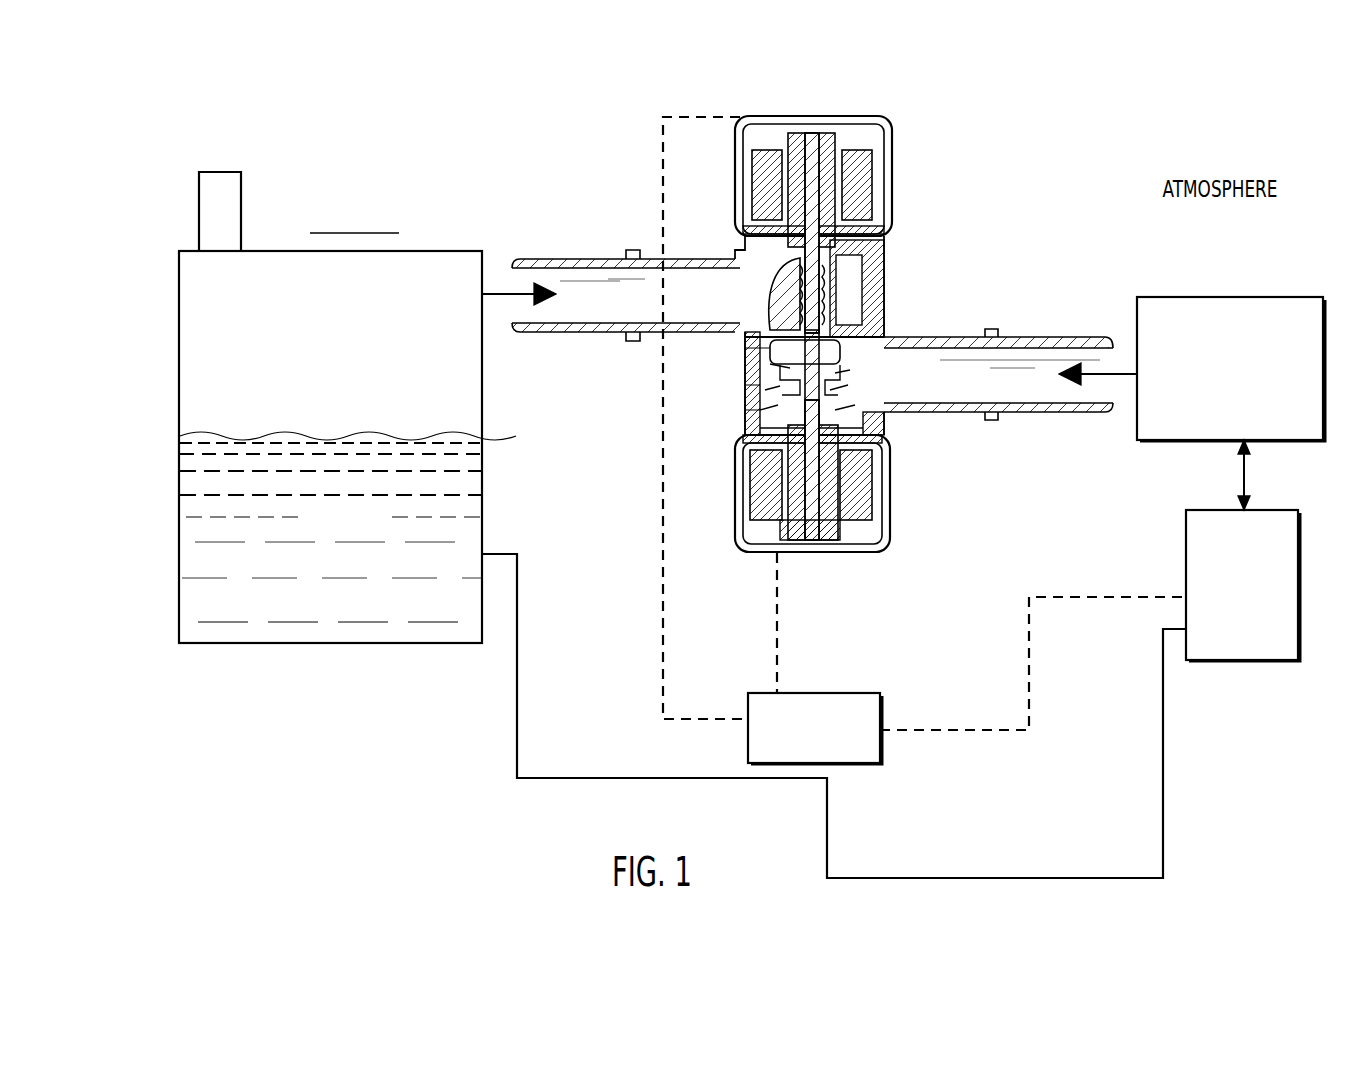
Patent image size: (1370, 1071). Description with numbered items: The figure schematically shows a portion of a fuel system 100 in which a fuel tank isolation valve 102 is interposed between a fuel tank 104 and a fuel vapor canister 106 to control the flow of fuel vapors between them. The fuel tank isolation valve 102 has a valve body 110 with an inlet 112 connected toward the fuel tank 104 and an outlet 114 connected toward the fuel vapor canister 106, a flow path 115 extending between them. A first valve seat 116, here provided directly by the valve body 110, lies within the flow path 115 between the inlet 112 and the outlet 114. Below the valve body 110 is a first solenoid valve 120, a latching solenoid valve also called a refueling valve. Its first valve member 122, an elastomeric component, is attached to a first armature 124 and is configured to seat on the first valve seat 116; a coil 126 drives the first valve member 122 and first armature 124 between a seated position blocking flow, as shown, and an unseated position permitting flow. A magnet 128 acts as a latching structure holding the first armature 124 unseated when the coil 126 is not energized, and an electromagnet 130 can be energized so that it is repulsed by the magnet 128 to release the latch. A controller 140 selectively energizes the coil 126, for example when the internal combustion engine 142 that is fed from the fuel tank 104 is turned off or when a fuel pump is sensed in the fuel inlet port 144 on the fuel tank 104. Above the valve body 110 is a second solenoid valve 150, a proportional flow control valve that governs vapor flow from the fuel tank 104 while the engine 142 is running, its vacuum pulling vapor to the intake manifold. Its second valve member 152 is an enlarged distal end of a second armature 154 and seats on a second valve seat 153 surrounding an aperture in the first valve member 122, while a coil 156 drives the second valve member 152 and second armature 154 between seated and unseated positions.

The fuel system 100 is at (420, 757).
The fuel tank isolation valve 102 is at (936, 160).
The fuel tank 104 is at (252, 645).
The fuel vapor canister 106 is at (1150, 442).
The valve body 110 is at (805, 281).
The inlet 112 is at (545, 270).
The outlet 114 is at (1042, 367).
The flow path 115 is at (965, 373).
The first valve seat 116 is at (845, 360).
The first solenoid valve 120 is at (871, 523).
The first valve member 122 is at (768, 378).
The first armature 124 is at (812, 462).
The coil 126 is at (862, 486).
The magnet 128 is at (832, 522).
The electromagnet 130 is at (872, 532).
The controller 140 is at (843, 752).
The internal combustion engine 142 is at (1232, 662).
The fuel inlet port 144 is at (241, 190).
The second solenoid valve 150 is at (868, 183).
The second valve member 152 is at (805, 300).
The second valve seat 153 is at (788, 330).
The second armature 154 is at (810, 165).
The coil 156 is at (858, 162).